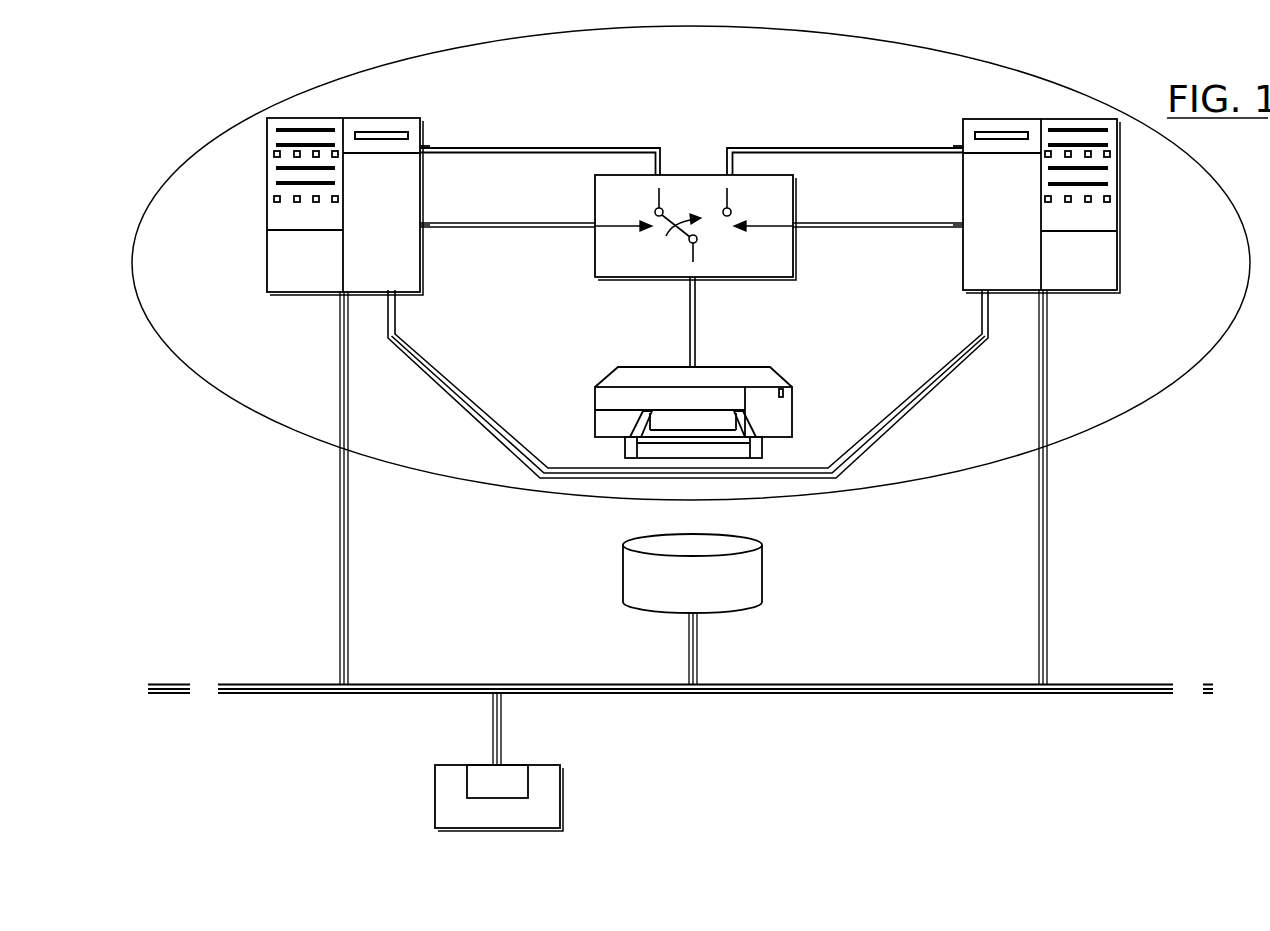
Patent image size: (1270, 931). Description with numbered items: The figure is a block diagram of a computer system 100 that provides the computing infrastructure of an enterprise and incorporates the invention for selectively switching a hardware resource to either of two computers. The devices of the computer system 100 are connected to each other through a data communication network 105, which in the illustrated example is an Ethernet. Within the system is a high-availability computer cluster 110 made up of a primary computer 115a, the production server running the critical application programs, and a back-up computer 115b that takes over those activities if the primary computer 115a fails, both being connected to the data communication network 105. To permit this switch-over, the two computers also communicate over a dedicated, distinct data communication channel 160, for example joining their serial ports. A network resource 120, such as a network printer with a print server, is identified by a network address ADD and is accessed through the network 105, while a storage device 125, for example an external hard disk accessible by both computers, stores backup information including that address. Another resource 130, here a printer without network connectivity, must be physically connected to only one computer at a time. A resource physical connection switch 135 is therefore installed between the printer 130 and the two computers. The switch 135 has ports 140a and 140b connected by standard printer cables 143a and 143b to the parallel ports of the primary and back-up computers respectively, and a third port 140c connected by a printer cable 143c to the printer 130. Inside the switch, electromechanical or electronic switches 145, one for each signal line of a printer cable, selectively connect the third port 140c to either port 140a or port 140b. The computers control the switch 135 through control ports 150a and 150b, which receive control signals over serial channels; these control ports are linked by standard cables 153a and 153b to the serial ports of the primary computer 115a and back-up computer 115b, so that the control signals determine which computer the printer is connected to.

The computer system 100 is at (208, 761).
The data communication network 105 is at (267, 683).
The high-availability computer cluster 110 is at (224, 401).
The primary computer 115a is at (312, 286).
The back-up computer 115b is at (1070, 287).
The network resource 120 is at (560, 792).
The storage device 125 is at (762, 575).
The resource 130 is at (595, 413).
The resource physical connection switch 135 is at (600, 279).
The port 140a is at (662, 174).
The port 140b is at (735, 173).
The third port 140c is at (688, 283).
The printer cable 143a is at (555, 145).
The printer cable 143b is at (815, 148).
The printer cable 143c is at (695, 310).
The electromechanical or electronic switches 145 is at (737, 205).
The control port 150a is at (595, 223).
The control port 150b is at (800, 223).
The standard cable 153a is at (507, 223).
The standard cable 153b is at (917, 223).
The dedicated data communication channel 160 is at (487, 433).